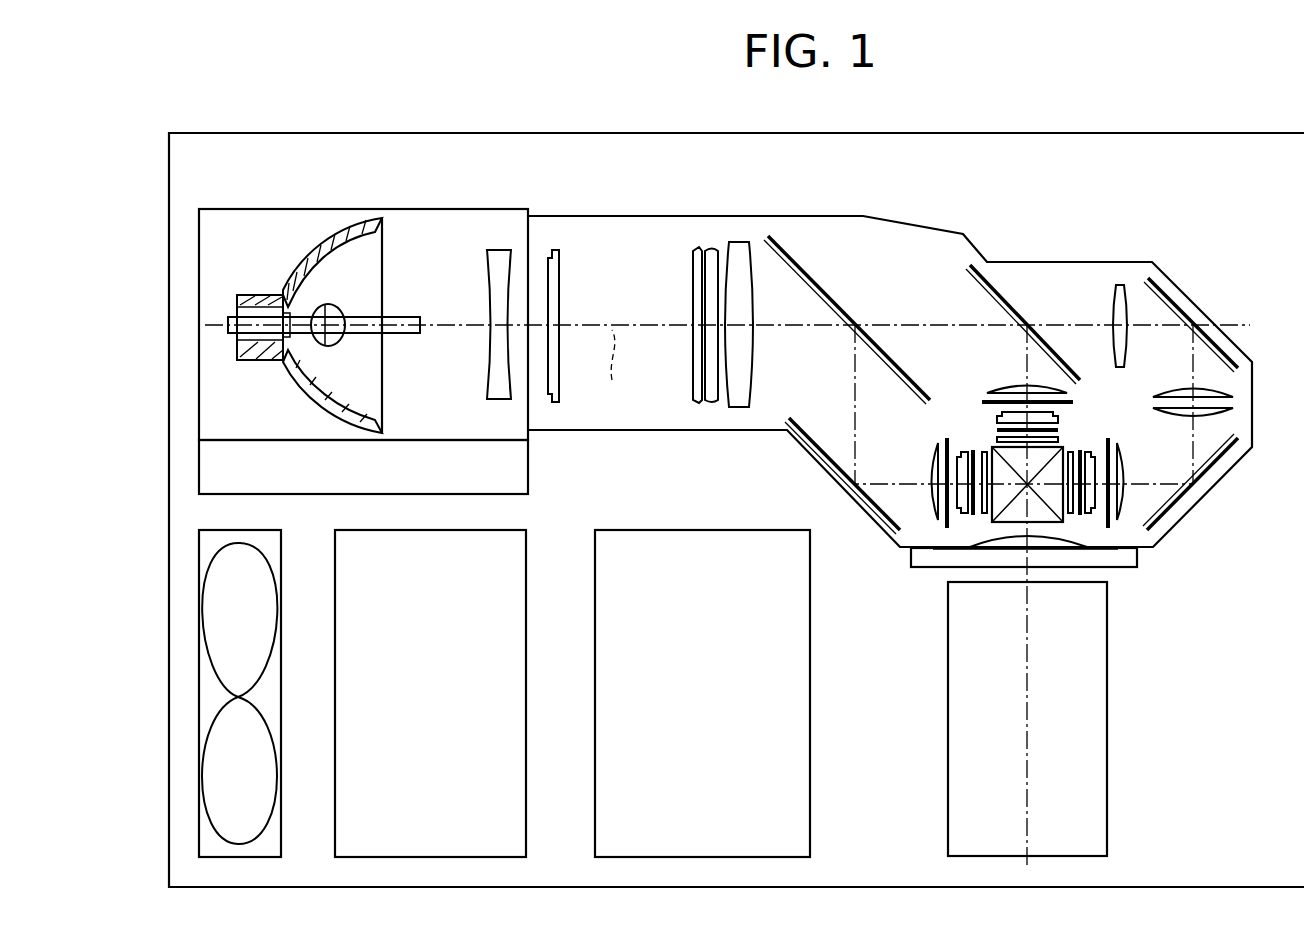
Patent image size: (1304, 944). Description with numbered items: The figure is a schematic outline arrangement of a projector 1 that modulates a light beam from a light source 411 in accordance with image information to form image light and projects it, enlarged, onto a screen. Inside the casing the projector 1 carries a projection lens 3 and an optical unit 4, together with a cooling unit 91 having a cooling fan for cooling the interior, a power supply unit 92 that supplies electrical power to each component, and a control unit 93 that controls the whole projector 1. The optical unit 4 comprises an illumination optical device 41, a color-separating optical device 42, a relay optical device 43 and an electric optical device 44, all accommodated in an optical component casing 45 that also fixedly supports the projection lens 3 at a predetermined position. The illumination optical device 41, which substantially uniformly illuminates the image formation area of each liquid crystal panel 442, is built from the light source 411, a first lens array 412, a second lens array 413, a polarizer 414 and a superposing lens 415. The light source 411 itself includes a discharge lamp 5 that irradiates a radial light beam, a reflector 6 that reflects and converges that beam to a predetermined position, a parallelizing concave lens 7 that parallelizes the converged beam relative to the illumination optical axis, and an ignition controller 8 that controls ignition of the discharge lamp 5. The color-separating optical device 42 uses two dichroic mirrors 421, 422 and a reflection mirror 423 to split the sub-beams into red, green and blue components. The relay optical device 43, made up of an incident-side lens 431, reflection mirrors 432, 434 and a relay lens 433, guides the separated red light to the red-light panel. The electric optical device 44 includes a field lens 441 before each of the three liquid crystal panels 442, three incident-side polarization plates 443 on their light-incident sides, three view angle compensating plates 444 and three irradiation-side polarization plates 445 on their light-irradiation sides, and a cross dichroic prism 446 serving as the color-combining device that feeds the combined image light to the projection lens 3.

The projector 1 is at (1092, 97).
The projection lens 3 is at (1107, 726).
The optical unit 4 is at (740, 466).
The discharge lamp 5 is at (352, 315).
The reflector 6 is at (357, 221).
The parallelizing concave lens 7 is at (497, 249).
The ignition controller 8 is at (517, 466).
The illumination optical device 41 is at (494, 254).
The color-separating optical device 42 is at (926, 350).
The relay optical device 43 is at (1198, 393).
The electric optical device 44 is at (1031, 511).
The optical component casing 45 is at (1042, 261).
The cooling unit 91 is at (242, 529).
The power supply unit 92 is at (456, 529).
The control unit 93 is at (736, 529).
The light source 411 is at (235, 163).
The first lens array 412 is at (560, 288).
The second lens array 413 is at (697, 250).
The polarizer 414 is at (718, 248).
The superposing lens 415 is at (745, 275).
The dichroic mirror 421 is at (806, 266).
The dichroic mirror 422 is at (1010, 302).
The reflection mirror 423 is at (813, 440).
The incident-side lens 431 is at (1118, 288).
The reflection mirror 432 is at (1215, 347).
The relay lens 433 is at (1234, 412).
The reflection mirror 434 is at (1220, 467).
The field lens 441 is at (1012, 385).
The liquid crystal panel 442 is at (996, 420).
The incident-side polarization plate 443 is at (983, 401).
The view angle compensating plate 444 is at (996, 430).
The irradiation-side polarization plate 445 is at (1078, 415).
The cross dichroic prism 446 is at (1037, 520).